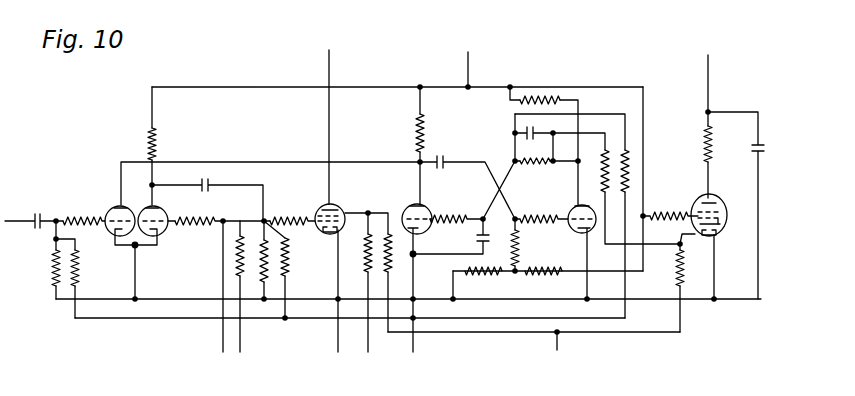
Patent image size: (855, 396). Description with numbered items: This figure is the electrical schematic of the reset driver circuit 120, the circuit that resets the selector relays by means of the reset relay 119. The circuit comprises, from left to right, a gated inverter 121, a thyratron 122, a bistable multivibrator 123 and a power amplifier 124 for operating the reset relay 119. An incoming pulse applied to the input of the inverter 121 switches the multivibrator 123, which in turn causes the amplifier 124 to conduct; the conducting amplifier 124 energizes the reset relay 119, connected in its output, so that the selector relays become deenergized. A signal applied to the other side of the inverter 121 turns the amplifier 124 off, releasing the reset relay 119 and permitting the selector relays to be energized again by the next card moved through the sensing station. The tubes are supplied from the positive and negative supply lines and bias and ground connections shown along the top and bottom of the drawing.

The reset relay 119 is at (696, 71).
The reset driver circuit 120 is at (384, 200).
The gated inverter 121 is at (113, 209).
The thyratron 122 is at (320, 208).
The bistable multivibrator 123 is at (474, 192).
The power amplifier 124 is at (712, 201).